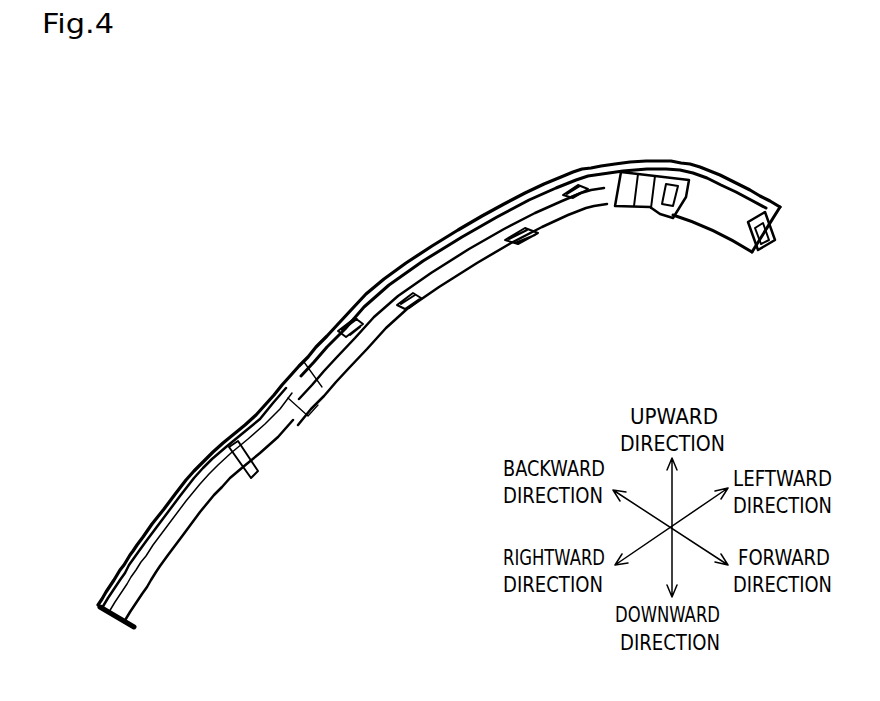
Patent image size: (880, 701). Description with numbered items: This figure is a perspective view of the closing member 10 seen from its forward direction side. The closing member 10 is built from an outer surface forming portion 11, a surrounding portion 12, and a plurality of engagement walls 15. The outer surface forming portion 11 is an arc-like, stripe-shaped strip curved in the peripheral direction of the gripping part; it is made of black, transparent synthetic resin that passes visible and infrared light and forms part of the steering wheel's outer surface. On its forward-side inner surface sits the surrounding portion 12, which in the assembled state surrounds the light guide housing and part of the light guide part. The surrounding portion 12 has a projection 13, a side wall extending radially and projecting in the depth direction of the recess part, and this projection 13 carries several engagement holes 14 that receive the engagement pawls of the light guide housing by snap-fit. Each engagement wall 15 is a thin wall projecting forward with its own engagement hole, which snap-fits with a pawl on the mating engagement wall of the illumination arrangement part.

The closing member 10 is at (687, 103).
The outer surface forming portion 11 is at (706, 190).
The surrounding portion 12 is at (348, 376).
The projection 13 is at (527, 207).
The engagement holes 14 is at (352, 307).
The engagement walls 15 is at (677, 218).